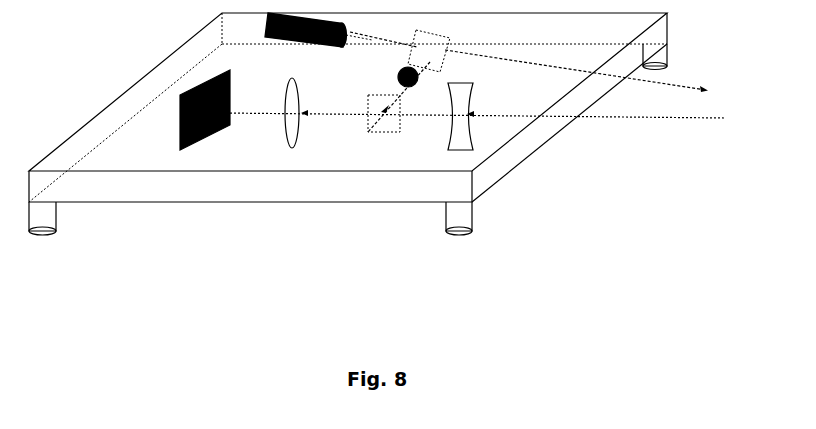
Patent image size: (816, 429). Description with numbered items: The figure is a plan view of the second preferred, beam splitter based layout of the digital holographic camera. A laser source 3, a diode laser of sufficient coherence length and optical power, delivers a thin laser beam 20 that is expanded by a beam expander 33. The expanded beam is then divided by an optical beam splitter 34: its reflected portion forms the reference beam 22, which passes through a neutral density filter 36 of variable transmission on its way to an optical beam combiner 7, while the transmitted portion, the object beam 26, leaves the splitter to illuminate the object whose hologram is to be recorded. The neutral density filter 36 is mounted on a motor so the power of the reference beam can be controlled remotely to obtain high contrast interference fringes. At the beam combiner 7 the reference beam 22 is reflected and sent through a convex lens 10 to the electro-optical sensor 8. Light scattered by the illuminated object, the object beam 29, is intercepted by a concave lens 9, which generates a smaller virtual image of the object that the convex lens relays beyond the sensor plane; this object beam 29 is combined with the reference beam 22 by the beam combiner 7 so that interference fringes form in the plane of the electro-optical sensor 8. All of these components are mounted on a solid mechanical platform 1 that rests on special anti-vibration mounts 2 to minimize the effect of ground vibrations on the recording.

The solid mechanical platform 1 is at (348, 107).
The anti-vibration mounts 2 is at (356, 141).
The laser source 3 is at (296, 30).
The optical beam combiner 7 is at (384, 126).
The electro-optical sensor 8 is at (205, 115).
The concave lens 9 is at (469, 116).
The convex lens 10 is at (306, 113).
The thin laser beam 20 is at (360, 33).
The reference beam 22 is at (418, 69).
The object beam 26 is at (593, 75).
The object beam (light scattered by the object) 29 is at (473, 134).
The beam expander 33 is at (383, 49).
The optical beam splitter 34 is at (429, 38).
The neutral density filter 36 is at (399, 97).